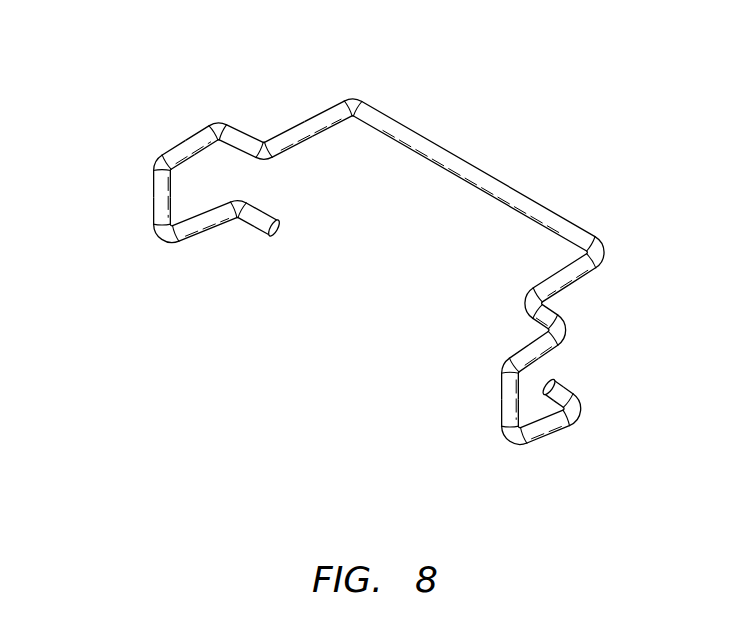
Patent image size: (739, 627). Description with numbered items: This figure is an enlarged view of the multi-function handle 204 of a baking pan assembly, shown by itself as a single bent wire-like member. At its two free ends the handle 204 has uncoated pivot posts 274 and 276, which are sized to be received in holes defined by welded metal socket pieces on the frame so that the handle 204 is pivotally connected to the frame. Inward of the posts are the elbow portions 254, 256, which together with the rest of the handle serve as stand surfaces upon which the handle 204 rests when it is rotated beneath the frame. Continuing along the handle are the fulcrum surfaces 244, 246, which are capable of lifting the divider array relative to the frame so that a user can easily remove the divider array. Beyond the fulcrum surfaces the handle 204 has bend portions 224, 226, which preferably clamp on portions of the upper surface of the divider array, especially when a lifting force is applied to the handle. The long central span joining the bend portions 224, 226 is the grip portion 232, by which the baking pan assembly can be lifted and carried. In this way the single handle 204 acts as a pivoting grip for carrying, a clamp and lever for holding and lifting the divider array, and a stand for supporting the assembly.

The multi-function handle 204 is at (355, 276).
The bend portion 224 is at (243, 135).
The bend portion 226 is at (555, 310).
The grip portion 232 is at (502, 183).
The fulcrum surface 244 is at (150, 158).
The fulcrum surface 246 is at (498, 383).
The elbow portion 254 is at (144, 248).
The elbow portion 256 is at (493, 440).
The uncoated pivot post 274 is at (264, 232).
The uncoated pivot post 276 is at (560, 378).